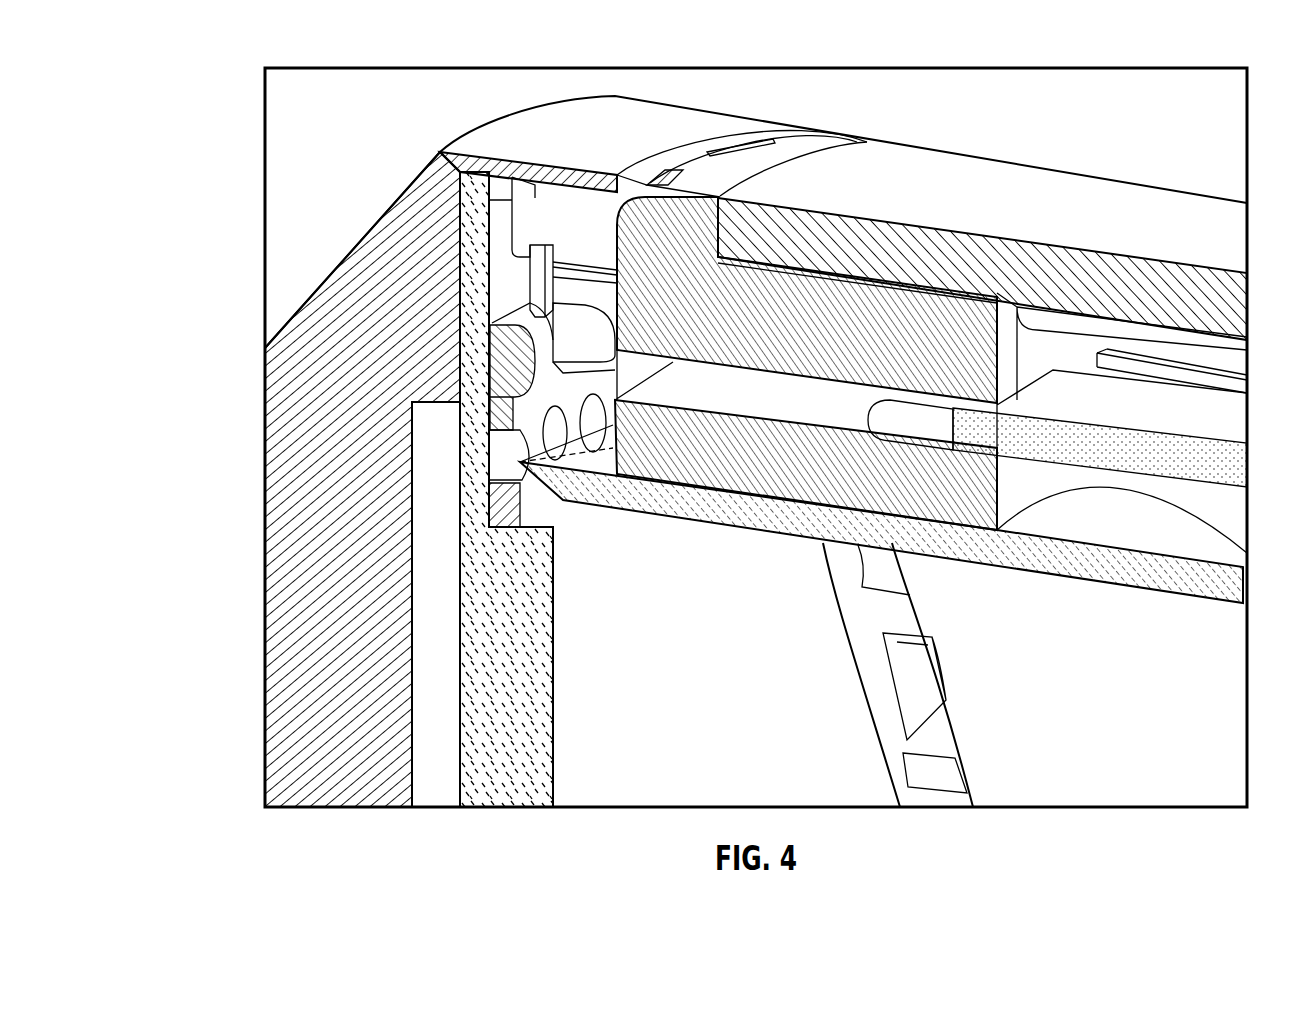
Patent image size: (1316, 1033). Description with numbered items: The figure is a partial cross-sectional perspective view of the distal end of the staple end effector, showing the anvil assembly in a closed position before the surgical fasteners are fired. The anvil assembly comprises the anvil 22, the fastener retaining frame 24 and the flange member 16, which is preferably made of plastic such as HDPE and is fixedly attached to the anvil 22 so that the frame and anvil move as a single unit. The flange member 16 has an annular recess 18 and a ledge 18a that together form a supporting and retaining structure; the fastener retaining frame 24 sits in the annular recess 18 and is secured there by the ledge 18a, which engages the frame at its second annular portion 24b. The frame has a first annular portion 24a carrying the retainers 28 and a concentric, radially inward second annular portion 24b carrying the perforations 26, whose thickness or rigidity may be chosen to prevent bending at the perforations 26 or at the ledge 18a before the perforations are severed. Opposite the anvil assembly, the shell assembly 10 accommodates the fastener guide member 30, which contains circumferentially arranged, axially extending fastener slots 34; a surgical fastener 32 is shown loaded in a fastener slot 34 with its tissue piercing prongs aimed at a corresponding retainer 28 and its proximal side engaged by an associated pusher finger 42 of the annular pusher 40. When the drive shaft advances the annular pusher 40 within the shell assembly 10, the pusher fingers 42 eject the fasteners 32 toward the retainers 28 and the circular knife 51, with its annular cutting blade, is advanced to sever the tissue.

The shell assembly 10 is at (1030, 175).
The flange member 16 is at (495, 698).
The annular recess 18 is at (533, 452).
The ledge 18a is at (537, 503).
The anvil 22 is at (677, 113).
The fastener retaining frame 24 is at (565, 247).
The first annular portion 24a is at (532, 212).
The second annular portion 24b is at (533, 397).
The perforations 26 is at (597, 420).
The retainers 28 is at (575, 292).
The fastener guide member 30 is at (802, 492).
The surgical fastener 32 is at (915, 423).
The fastener slot 34 is at (767, 403).
The annular pusher 40 is at (1237, 462).
The pusher finger 42 is at (1147, 455).
The circular knife 51 is at (1143, 570).